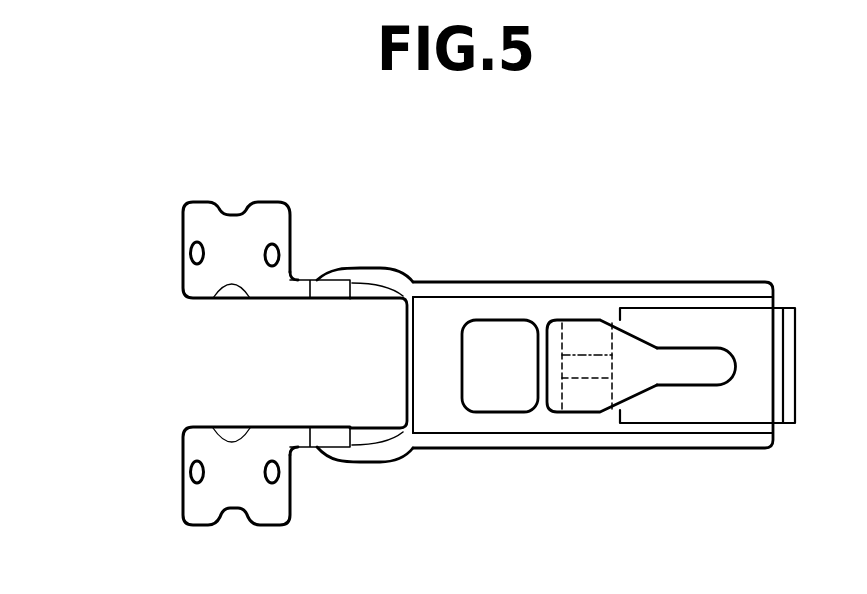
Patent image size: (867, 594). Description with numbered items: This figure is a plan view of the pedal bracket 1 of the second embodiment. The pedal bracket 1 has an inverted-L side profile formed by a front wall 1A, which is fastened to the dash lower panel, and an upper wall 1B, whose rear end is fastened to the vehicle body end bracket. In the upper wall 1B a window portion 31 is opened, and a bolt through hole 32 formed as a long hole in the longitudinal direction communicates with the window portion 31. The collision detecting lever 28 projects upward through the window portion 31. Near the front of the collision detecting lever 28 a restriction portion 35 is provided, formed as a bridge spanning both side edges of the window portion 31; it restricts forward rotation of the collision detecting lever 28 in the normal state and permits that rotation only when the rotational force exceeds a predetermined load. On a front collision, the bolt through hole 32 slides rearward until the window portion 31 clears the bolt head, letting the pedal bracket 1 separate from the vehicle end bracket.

The pedal bracket 1 is at (431, 272).
The front wall 1A is at (185, 237).
The upper wall 1B is at (597, 306).
The window portion 31 is at (514, 321).
The restriction portion 35 is at (542, 405).
The bolt through hole 32 is at (706, 378).
The collision detecting lever 28 is at (576, 372).